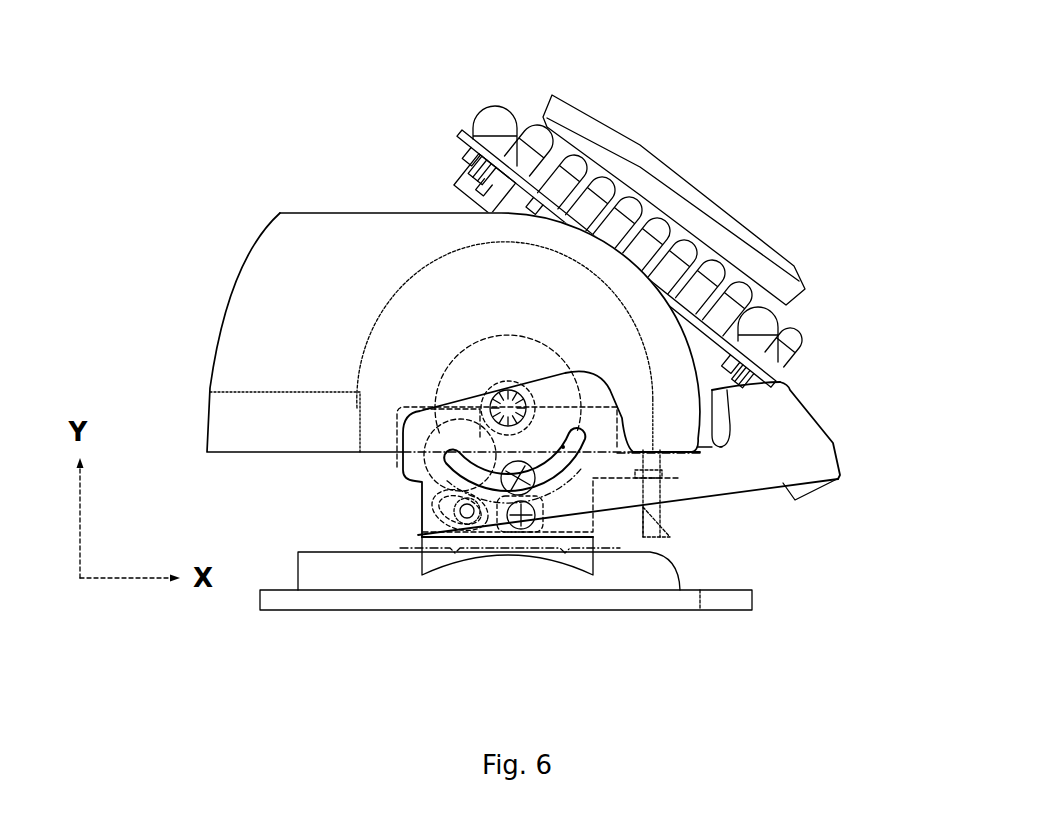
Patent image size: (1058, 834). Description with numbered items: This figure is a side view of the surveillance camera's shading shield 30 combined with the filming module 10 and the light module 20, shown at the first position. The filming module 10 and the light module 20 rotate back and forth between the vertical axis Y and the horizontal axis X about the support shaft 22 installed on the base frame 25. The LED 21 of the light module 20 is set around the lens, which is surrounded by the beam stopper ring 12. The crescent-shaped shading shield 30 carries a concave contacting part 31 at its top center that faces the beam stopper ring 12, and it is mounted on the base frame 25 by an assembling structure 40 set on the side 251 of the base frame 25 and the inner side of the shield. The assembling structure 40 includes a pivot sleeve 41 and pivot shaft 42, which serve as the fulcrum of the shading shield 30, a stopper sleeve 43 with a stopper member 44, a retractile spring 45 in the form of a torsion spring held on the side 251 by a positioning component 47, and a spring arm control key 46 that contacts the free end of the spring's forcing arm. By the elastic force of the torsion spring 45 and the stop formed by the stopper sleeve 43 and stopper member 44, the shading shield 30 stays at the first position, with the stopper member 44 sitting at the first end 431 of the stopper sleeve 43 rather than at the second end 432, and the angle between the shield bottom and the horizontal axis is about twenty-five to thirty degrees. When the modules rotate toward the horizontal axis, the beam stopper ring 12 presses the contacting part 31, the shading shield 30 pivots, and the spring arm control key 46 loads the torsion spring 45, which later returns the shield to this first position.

The filming module 10 is at (540, 79).
The beam stopper ring 12 is at (797, 280).
The light module 20 is at (459, 114).
The LED 21 is at (517, 140).
The support shaft 22 is at (506, 370).
The base frame 25 is at (723, 590).
The side of the base frame 251 is at (425, 495).
The shading shield 30 is at (790, 455).
The contacting part 31 is at (833, 443).
The assembling structure 40 is at (380, 483).
The pivot sleeve 41 is at (492, 405).
The pivot shaft 42 is at (508, 408).
The stopper sleeve 43 is at (450, 530).
The first end 431 is at (488, 530).
The second end 432 is at (438, 512).
The stopper member 44 is at (468, 515).
The retractile spring 45 is at (585, 496).
The spring arm control key 46 is at (660, 498).
The positioning component 47 is at (526, 518).